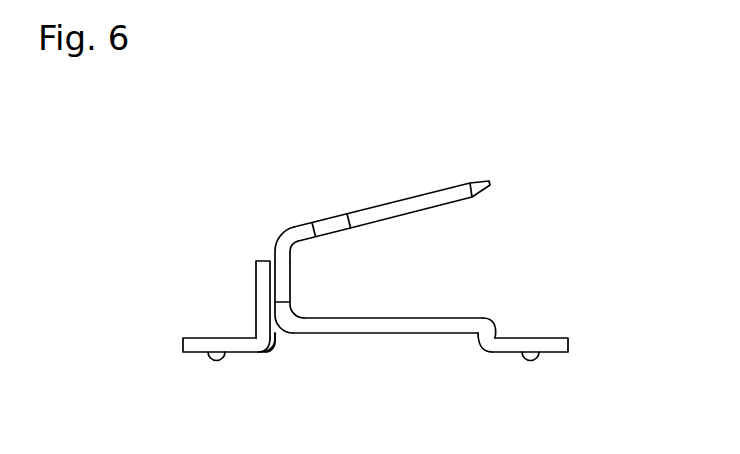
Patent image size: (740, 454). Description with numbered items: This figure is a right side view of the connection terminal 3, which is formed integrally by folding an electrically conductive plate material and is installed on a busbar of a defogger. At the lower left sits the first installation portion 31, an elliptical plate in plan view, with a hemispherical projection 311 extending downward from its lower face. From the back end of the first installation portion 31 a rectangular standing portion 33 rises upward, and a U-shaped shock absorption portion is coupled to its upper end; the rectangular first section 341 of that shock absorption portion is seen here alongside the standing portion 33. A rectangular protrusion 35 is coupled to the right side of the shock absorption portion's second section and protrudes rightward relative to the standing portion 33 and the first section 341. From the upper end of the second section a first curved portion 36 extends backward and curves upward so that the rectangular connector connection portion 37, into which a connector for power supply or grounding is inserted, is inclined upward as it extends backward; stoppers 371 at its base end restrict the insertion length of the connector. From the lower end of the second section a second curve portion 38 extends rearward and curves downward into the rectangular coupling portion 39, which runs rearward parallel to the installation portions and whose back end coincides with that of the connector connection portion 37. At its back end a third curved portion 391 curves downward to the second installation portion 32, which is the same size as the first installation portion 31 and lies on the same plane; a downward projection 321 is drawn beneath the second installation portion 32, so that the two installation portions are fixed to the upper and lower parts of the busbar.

The connection terminal 3 is at (178, 228).
The first installation portion 31 is at (203, 345).
The hemispherical projections 311 is at (222, 362).
The second installation portion 32 is at (535, 341).
The solder bump of second mounting portion 321 is at (530, 361).
The standing portion 33 is at (260, 318).
The first section 341 is at (268, 279).
The protrusion 35 is at (282, 288).
The first curved portion 36 is at (293, 232).
The connector connection portion 37 is at (427, 200).
The stoppers 371 is at (332, 222).
The second curve portion 38 is at (293, 322).
The coupling portion 39 is at (382, 328).
The third curved portion 391 is at (483, 322).